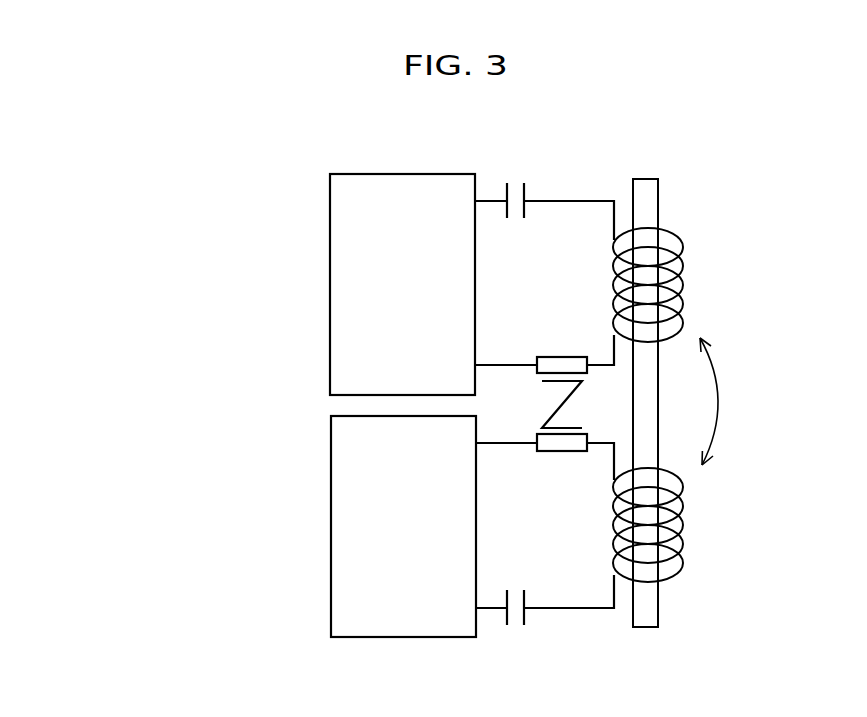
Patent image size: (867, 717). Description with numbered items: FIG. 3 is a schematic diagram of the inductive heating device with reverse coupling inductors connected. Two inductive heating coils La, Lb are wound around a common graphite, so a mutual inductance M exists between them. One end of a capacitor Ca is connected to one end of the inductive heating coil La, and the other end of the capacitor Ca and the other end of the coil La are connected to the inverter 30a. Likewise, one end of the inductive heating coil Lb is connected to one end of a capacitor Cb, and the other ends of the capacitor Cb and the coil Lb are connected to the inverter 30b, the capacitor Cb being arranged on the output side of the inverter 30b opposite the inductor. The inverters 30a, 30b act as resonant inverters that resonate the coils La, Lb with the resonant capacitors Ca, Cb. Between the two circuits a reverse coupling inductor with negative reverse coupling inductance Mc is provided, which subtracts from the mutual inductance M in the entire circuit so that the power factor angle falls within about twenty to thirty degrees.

The inverter 30a is at (330, 285).
The inverter 30b is at (331, 527).
The capacitor Ca is at (544, 218).
The capacitor Cb is at (545, 617).
The inductive heating coil La is at (667, 285).
The inductive heating coil Lb is at (667, 525).
The mutual inductance M is at (730, 401).
The reverse coupling inductance Mc is at (542, 408).